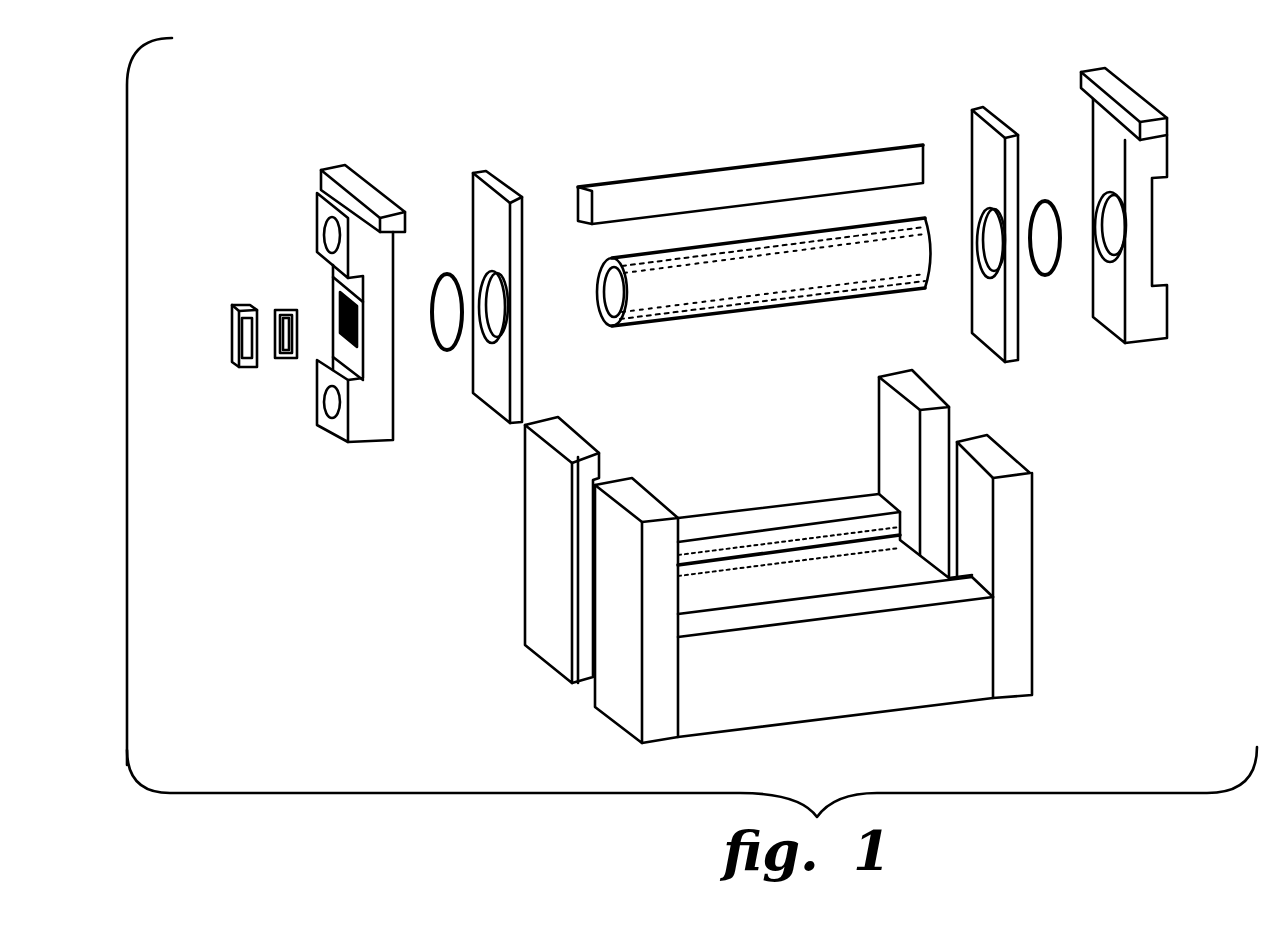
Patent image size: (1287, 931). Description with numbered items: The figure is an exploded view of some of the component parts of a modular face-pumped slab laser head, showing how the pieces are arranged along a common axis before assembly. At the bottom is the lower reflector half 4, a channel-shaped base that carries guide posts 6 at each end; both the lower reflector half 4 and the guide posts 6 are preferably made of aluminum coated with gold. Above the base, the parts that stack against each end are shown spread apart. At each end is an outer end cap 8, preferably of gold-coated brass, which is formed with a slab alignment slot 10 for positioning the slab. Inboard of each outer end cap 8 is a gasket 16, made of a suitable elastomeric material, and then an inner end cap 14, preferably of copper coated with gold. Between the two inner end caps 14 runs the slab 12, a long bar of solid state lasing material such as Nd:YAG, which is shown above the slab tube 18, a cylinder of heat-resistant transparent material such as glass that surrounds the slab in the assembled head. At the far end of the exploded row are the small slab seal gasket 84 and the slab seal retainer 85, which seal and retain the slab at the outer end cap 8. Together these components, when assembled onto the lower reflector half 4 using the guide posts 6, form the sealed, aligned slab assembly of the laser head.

The lower reflector half 4 is at (577, 692).
The guide posts 6 is at (537, 523).
The outer end cap 8 is at (372, 445).
The slab alignment slot 10 is at (340, 324).
The slab 12 is at (817, 157).
The inner end cap 14 is at (522, 373).
The gaskets 16 is at (447, 272).
The slab tube 18 is at (802, 282).
The slab seal gasket 84 is at (293, 308).
The slab seal retainer 85 is at (240, 368).